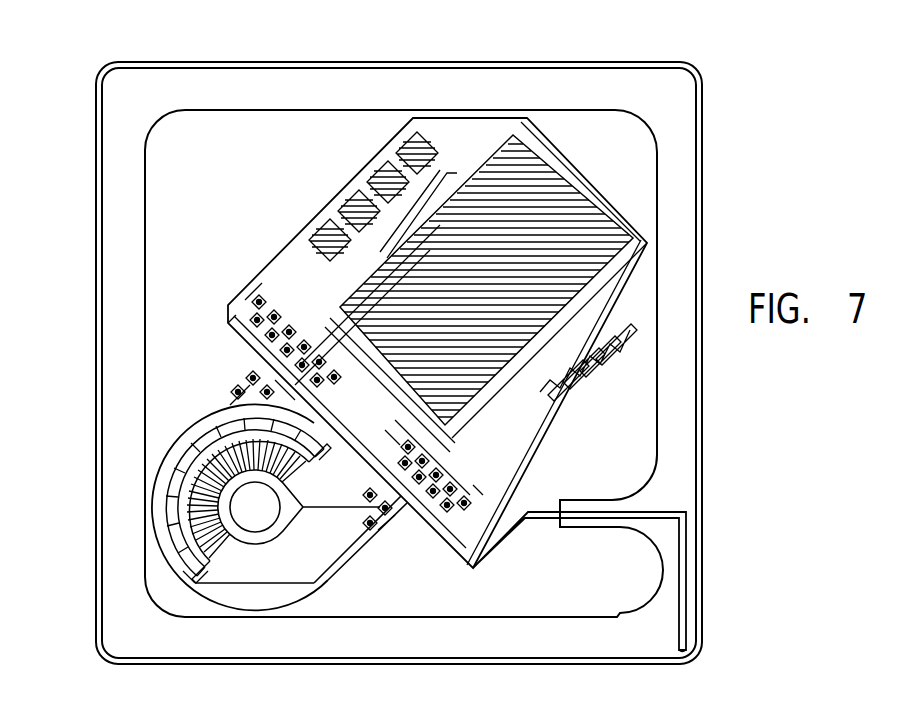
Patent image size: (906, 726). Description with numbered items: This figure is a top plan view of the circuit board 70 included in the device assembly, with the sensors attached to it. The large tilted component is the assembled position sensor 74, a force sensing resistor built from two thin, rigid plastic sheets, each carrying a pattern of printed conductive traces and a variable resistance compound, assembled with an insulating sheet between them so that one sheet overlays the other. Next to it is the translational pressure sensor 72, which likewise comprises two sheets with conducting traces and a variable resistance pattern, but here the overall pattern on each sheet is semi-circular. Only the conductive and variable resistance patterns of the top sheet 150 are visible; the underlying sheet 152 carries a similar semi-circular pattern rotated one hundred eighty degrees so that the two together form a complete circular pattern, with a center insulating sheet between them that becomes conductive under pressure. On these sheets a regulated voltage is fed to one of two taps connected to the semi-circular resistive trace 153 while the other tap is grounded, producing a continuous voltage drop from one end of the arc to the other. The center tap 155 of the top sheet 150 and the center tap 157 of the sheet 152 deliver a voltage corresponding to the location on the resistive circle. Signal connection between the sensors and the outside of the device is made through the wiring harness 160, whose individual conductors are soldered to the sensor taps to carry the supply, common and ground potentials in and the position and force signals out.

The circuit board 70 is at (228, 62).
The position sensor 74 is at (465, 118).
The center tap 157 is at (238, 338).
The sheet 152 is at (240, 410).
The semi-circular resistive trace 153 is at (165, 540).
The top sheet 150 is at (270, 598).
The translational pressure sensor 72 is at (348, 568).
The center tap 155 is at (393, 530).
The wiring harness 160 is at (663, 510).